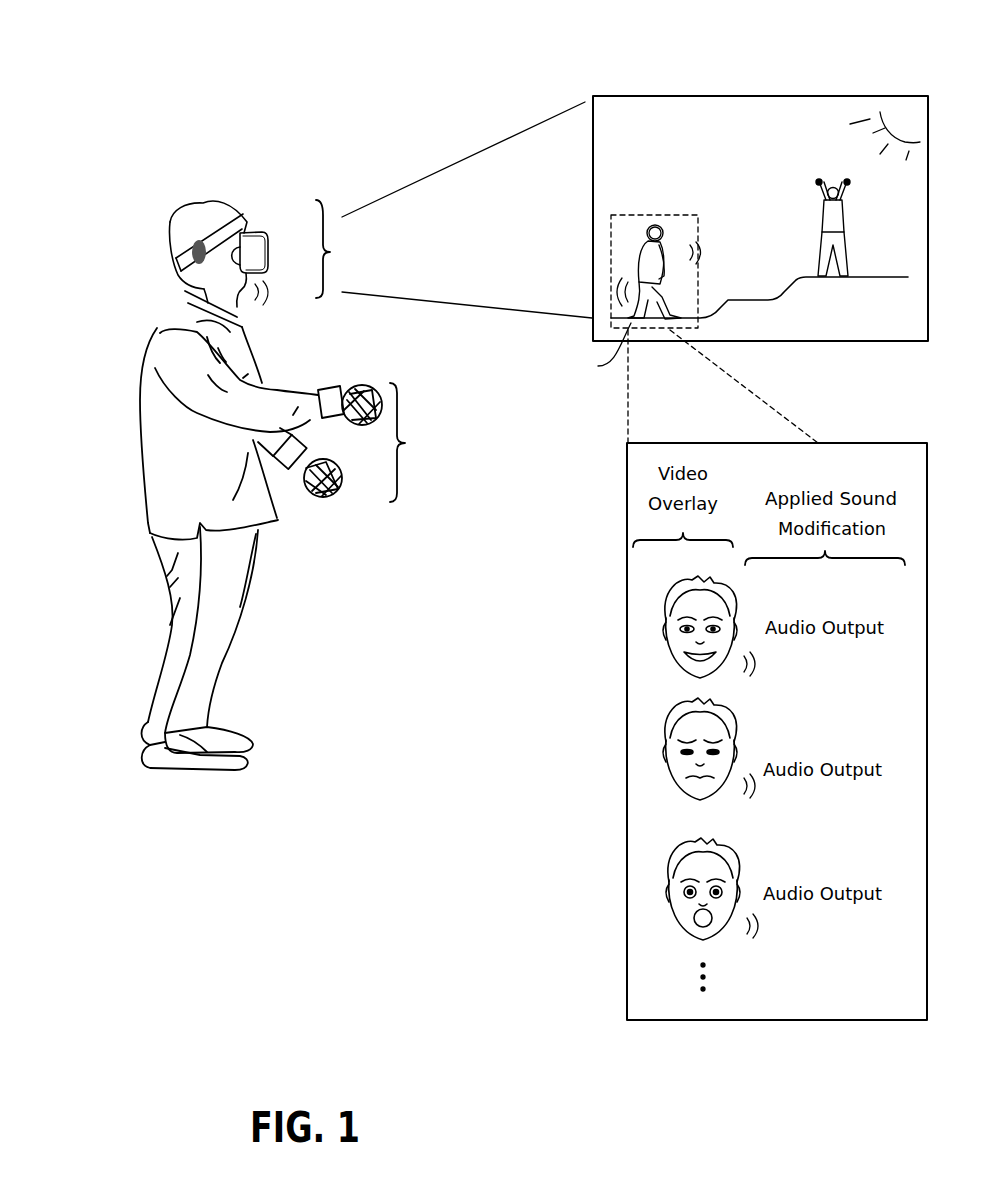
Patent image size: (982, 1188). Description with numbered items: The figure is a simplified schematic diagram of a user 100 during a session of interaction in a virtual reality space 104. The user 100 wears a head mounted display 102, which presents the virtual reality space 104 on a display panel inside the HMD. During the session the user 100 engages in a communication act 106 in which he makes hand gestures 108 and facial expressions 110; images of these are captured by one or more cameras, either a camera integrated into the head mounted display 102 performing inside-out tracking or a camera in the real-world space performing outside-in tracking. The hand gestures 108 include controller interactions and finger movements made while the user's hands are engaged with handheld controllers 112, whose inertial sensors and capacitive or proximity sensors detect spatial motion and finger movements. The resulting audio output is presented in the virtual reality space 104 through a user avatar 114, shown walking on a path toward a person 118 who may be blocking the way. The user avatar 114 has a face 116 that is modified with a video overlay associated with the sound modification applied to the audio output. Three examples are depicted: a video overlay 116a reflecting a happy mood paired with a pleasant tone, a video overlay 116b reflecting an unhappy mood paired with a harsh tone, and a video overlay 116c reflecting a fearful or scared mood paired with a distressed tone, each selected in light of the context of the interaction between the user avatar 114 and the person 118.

The user 100 is at (106, 402).
The head mounted display 102 is at (268, 225).
The virtual reality space 104 is at (612, 96).
The communication act 106 is at (274, 80).
The hand gestures 108 is at (402, 500).
The facial expressions 110 is at (323, 205).
The handheld controllers 112 is at (358, 386).
The user avatar 114 is at (628, 205).
The face 116 is at (662, 236).
The person 118 is at (848, 232).
The video overlay 116a is at (662, 630).
The video overlay 116b is at (662, 750).
The video overlay 116c is at (665, 870).